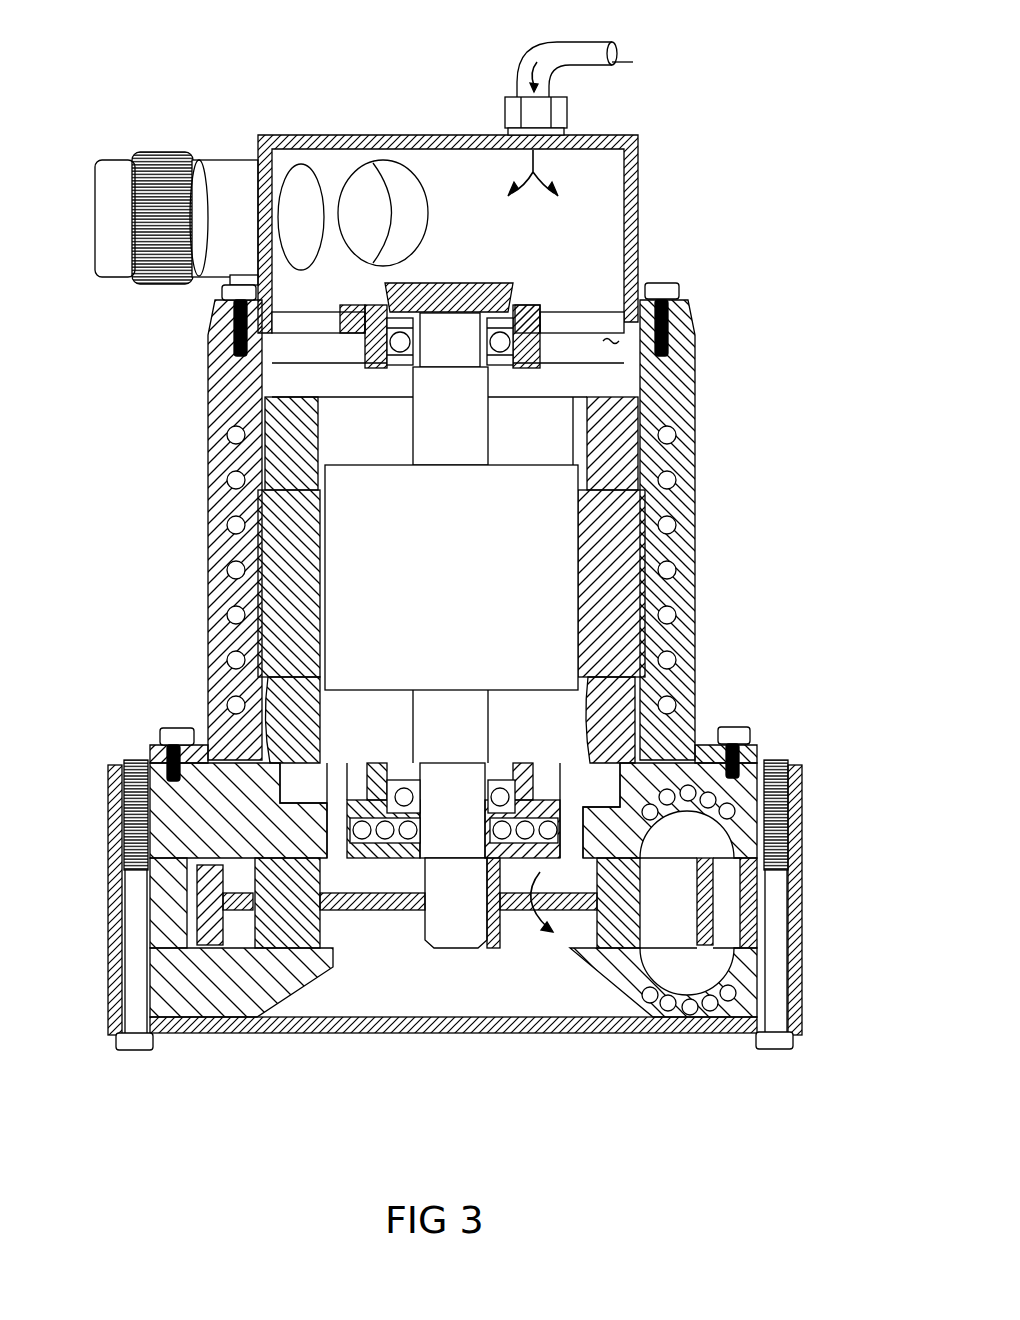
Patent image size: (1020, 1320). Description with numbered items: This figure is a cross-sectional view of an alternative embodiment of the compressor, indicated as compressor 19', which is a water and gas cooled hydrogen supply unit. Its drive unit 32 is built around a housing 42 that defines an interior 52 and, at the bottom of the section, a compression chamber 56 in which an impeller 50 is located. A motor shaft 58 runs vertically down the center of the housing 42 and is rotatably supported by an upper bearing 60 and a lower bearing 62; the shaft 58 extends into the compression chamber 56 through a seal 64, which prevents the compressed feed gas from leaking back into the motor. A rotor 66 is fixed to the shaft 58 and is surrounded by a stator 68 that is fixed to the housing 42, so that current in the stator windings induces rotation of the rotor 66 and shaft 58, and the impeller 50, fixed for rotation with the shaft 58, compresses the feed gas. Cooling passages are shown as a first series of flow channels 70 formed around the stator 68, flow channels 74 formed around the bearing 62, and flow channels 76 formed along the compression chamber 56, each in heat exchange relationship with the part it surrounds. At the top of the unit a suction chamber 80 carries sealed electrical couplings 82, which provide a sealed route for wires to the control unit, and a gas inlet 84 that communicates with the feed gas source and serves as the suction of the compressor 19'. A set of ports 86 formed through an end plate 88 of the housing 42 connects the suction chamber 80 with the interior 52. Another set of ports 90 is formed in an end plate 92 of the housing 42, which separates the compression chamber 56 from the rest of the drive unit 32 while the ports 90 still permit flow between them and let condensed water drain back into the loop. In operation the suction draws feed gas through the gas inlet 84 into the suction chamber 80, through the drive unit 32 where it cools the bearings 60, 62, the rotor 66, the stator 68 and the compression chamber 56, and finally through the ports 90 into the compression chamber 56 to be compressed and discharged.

The compressor 19' is at (846, 336).
The drive unit 32 is at (702, 312).
The housing 42 is at (700, 350).
The impeller 50 is at (623, 940).
The interior 52 is at (612, 340).
The compression chamber 56 is at (564, 948).
The shaft 58 is at (468, 330).
The bearing 60 is at (527, 333).
The bearing 62 is at (570, 798).
The seal 64 is at (405, 902).
The rotor 66 is at (565, 683).
The stator 68 is at (643, 607).
The flow channels 70 is at (226, 618).
The flow channels 74 is at (392, 840).
The flow channels 76 is at (733, 808).
The suction chamber 80 is at (432, 136).
The sealed electrical couplings 82 is at (373, 187).
The gas inlet 84 is at (547, 58).
The ports 86 is at (310, 372).
The end plate 88 is at (543, 292).
The ports 90 is at (333, 830).
The end plate 92 is at (108, 795).